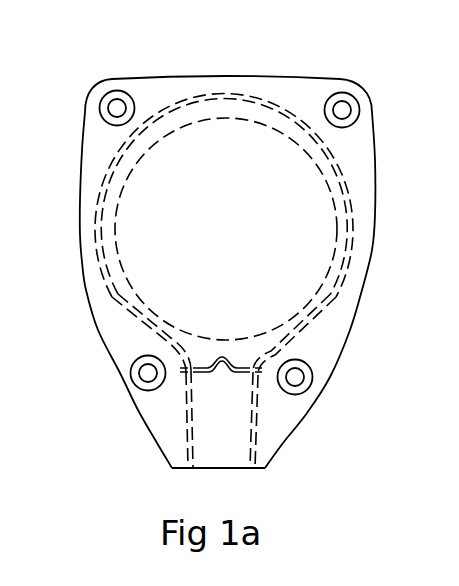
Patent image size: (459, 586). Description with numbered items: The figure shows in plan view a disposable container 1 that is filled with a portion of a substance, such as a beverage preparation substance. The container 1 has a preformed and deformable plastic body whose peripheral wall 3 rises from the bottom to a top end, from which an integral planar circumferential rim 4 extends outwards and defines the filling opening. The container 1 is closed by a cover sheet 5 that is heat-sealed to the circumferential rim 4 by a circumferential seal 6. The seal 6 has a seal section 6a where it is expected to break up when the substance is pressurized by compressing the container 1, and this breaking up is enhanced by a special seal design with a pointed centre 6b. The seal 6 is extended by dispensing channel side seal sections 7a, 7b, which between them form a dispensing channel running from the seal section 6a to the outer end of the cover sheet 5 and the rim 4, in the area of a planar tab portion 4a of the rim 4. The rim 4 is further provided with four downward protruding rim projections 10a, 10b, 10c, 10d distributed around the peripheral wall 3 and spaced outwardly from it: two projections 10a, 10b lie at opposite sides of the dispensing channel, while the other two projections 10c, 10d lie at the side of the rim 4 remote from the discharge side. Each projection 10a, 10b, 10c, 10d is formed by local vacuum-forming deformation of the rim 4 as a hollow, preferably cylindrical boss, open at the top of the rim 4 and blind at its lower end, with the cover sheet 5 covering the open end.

The disposable container 1 is at (407, 77).
The peripheral wall 3 is at (330, 185).
The circumferential rim 4 is at (365, 237).
The tab portion 4a is at (283, 425).
The cover sheet 5 is at (137, 203).
The circumferential seal 6 is at (327, 308).
The seal section 6a is at (212, 378).
The pointed centre 6b is at (222, 352).
The dispensing channel side seal section 7a is at (183, 425).
The dispensing channel side seal section 7b is at (253, 442).
The rim projection 10a is at (142, 375).
The rim projection 10b is at (298, 377).
The rim projection 10c is at (115, 107).
The rim projection 10d is at (342, 107).